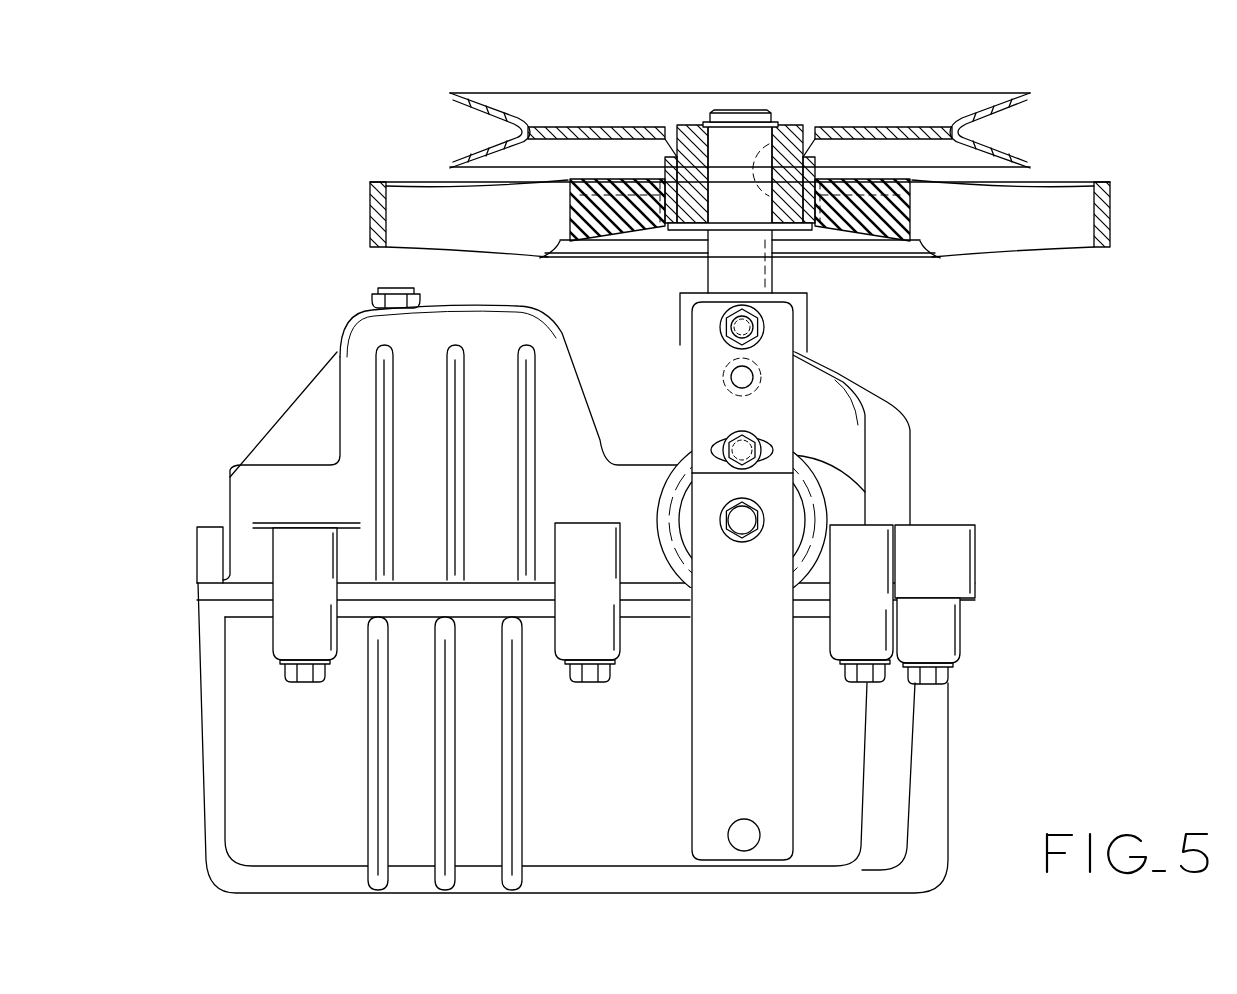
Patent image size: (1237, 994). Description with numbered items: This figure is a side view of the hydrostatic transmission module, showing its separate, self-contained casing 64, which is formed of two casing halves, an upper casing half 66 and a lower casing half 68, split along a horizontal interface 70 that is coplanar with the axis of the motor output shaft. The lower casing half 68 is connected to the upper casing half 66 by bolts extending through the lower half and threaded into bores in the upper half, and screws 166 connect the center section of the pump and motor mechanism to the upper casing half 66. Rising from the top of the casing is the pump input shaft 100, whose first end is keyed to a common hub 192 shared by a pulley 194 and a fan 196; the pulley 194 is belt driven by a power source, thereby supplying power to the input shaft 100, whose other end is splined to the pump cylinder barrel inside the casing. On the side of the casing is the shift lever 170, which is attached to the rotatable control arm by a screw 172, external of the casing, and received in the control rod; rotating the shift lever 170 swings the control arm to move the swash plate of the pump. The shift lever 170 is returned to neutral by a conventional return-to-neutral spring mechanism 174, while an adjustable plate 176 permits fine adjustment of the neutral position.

The casing 64 is at (998, 538).
The upper casing half 66 is at (272, 482).
The lower casing half 68 is at (605, 738).
The horizontal interface 70 is at (940, 605).
The input shaft 100 is at (745, 135).
The screws 166 is at (300, 682).
The shift lever 170 is at (772, 838).
The screw 172 is at (750, 520).
The return-to-neutral spring mechanism 174 is at (773, 358).
The adjustable plate 176 is at (707, 358).
The common hub 192 is at (694, 130).
The pulley 194 is at (985, 100).
The fan 196 is at (1070, 228).